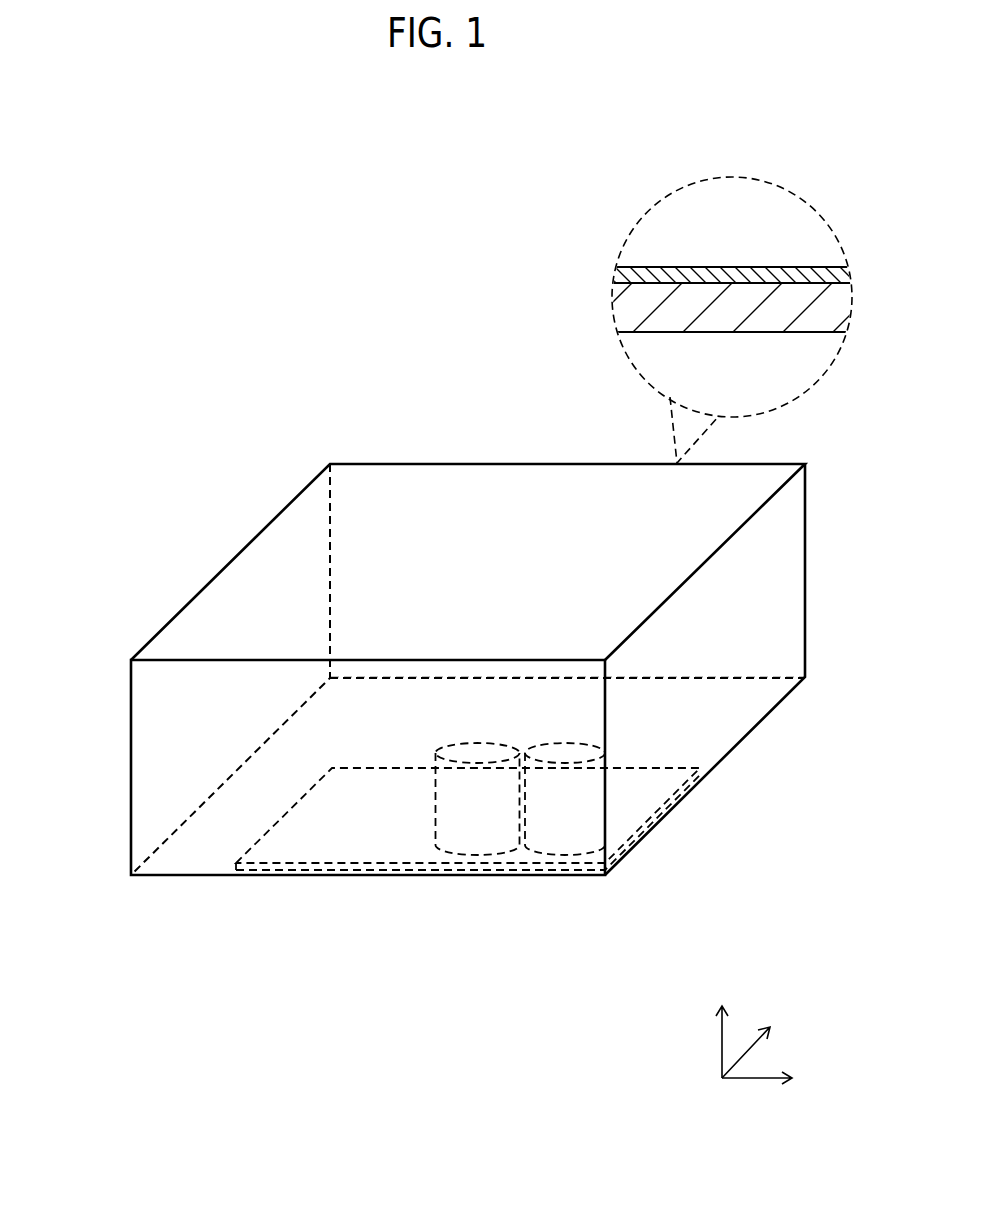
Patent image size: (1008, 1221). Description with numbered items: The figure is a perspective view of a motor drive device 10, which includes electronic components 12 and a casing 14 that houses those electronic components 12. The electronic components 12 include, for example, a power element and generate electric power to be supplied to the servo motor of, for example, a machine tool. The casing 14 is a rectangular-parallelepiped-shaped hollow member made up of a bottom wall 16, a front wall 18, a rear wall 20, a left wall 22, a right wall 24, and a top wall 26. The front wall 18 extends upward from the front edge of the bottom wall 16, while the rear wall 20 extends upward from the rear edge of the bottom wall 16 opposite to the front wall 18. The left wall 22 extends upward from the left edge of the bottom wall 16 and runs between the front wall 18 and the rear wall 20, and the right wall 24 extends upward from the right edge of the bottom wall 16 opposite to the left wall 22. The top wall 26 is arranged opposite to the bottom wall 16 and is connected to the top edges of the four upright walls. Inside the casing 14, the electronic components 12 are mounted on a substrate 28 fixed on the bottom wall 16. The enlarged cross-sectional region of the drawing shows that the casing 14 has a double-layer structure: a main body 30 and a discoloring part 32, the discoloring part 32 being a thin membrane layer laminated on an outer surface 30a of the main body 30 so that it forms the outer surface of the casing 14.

The motor drive device 10 is at (191, 211).
The electronic components 12 is at (558, 827).
The casing 14 is at (256, 518).
The bottom wall 16 is at (368, 707).
The front wall 18 is at (512, 530).
The rear wall 20 is at (183, 746).
The left wall 22 is at (205, 643).
The right wall 24 is at (780, 598).
The top wall 26 is at (360, 500).
The substrate 28 is at (360, 836).
The main body 30 is at (628, 312).
The outer surface of main body 30a is at (755, 283).
The discoloring part 32 is at (634, 272).